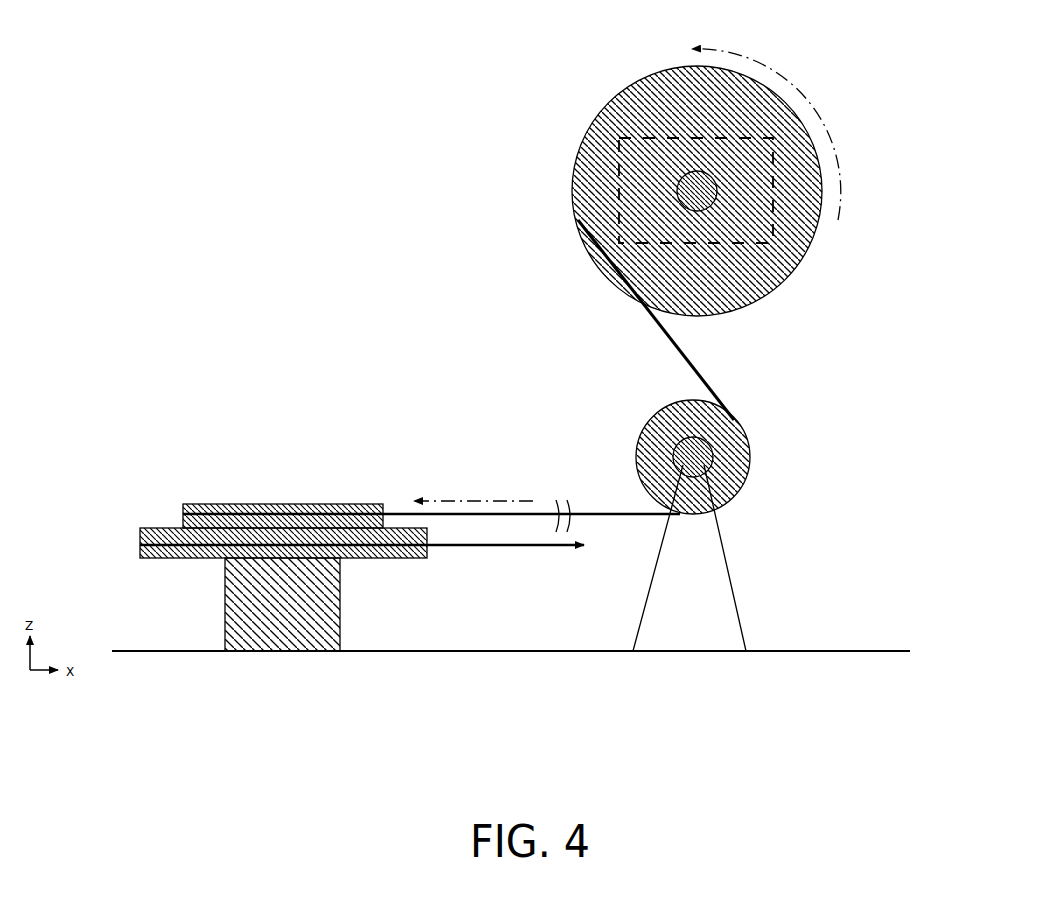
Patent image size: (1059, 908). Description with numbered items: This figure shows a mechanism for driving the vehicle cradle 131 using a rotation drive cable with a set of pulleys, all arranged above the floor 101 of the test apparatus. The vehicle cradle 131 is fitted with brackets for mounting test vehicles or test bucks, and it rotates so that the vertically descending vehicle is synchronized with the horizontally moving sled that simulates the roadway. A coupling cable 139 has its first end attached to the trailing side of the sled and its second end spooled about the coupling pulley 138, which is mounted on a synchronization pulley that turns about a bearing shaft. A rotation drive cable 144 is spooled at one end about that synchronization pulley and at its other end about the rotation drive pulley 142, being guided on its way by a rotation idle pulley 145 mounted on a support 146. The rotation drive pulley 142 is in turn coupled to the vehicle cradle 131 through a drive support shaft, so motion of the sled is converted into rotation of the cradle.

The floor 101 is at (422, 653).
The vehicle cradle 131 is at (648, 243).
The coupling pulley 138 is at (237, 502).
The coupling cable 139 is at (472, 548).
The rotation drive pulley 142 is at (588, 218).
The rotation drive cable 144 is at (667, 347).
The rotation idle pulley 145 is at (733, 492).
The roller support legs 146 is at (725, 615).